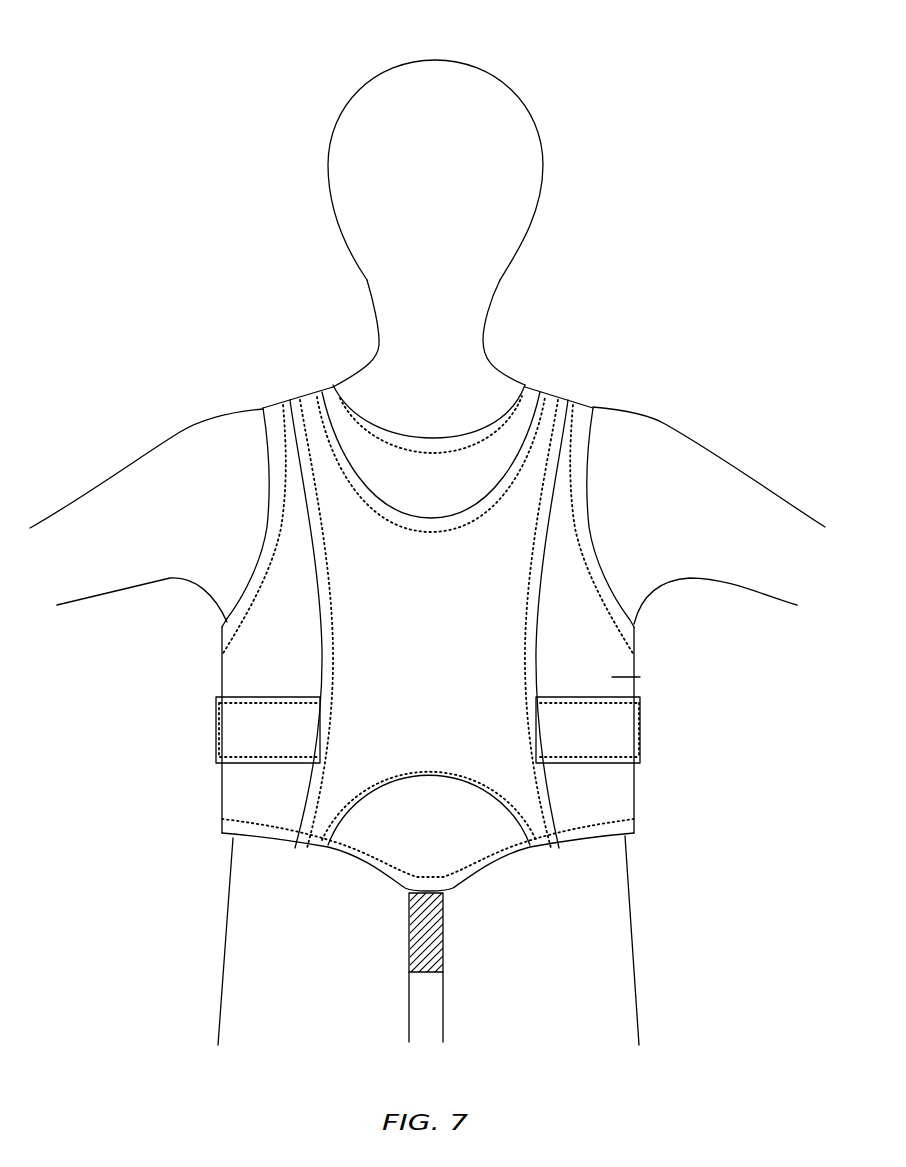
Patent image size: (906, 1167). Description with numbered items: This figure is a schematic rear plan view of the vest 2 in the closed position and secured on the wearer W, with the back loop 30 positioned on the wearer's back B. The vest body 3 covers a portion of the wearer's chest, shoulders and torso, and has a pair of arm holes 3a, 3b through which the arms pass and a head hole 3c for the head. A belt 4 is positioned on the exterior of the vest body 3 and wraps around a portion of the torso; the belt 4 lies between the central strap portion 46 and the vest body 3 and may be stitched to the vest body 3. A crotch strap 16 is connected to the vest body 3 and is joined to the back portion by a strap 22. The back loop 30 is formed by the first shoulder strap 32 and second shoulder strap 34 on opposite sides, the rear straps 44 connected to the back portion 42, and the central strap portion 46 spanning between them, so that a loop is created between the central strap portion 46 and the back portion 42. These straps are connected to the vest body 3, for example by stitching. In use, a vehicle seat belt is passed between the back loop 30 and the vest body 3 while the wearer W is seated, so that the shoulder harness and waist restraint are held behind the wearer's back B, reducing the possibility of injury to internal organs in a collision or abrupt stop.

The wearer W is at (478, 103).
The wearer's back B is at (613, 583).
The vest 2 is at (424, 669).
The vest body 3 is at (598, 632).
The arm hole 3a is at (265, 527).
The arm hole 3b is at (590, 525).
The head hole 3c is at (357, 412).
The belt 4 is at (625, 733).
The crotch strap 16 is at (433, 948).
The strap 22 is at (437, 932).
The back loop 30 is at (435, 604).
The first shoulder strap 32 is at (569, 408).
The second shoulder strap 34 is at (289, 410).
The back portion 42 is at (640, 677).
The rear straps 44 is at (318, 797).
The central strap portion 46 is at (372, 640).